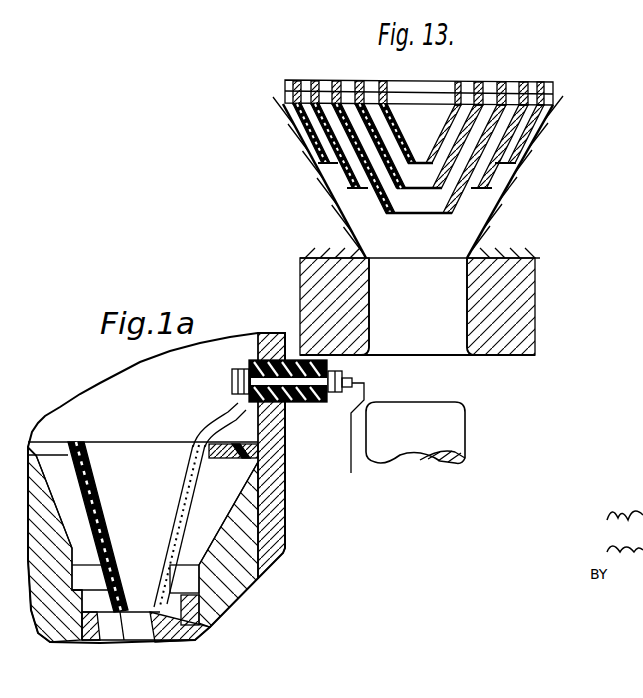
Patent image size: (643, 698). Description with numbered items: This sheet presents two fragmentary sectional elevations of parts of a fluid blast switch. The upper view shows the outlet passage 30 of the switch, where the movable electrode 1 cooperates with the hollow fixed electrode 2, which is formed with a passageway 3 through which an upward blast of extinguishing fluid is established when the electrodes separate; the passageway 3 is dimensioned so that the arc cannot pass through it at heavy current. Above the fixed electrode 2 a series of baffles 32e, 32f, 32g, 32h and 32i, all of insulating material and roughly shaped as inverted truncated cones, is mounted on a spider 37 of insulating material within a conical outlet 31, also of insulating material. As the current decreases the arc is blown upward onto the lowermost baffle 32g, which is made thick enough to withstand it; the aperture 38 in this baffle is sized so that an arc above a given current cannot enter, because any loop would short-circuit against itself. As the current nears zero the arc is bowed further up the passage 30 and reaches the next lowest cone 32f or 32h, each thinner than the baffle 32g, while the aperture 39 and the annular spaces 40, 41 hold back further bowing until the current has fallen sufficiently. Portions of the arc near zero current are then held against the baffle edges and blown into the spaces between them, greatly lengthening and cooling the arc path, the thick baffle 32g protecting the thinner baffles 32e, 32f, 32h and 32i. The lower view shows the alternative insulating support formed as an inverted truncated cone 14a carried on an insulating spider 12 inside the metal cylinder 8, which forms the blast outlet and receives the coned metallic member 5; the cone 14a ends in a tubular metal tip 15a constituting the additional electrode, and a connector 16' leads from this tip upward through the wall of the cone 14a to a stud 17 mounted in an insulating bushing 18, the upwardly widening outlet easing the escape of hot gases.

In FIG. 13, the spider 37 is at (322, 88).
In FIG. 13, the baffle 32e is at (458, 103).
In FIG. 13, the baffle 32f is at (480, 117).
In FIG. 13, the lowermost baffle 32g is at (442, 204).
In FIG. 13, the baffle 32h is at (493, 173).
In FIG. 13, the baffle 32i is at (528, 127).
In FIG. 13, the outlet passage 30 is at (388, 229).
In FIG. 13, the conical outlet 31 is at (493, 228).
In FIG. 13, the aperture 38 is at (418, 216).
In FIG. 13, the aperture 39 is at (413, 187).
In FIG. 13, the annular space 40 is at (383, 173).
In FIG. 13, the annular space 41 is at (365, 158).
In FIG. 13, the fixed electrode 2 is at (495, 309).
In FIG. 13, the passageway 3 is at (412, 344).
In FIG. 13, the movable electrode 1 is at (445, 432).
In FIG. 1A, the spider 12 is at (49, 441).
In FIG. 1A, the inverted truncated cone 14a is at (88, 455).
In FIG. 1A, the connector 16' is at (200, 502).
In FIG. 1A, the stud 17 is at (232, 382).
In FIG. 1A, the insulating bushing 18 is at (304, 403).
In FIG. 1A, the metal cylinder 8 is at (274, 473).
In FIG. 1A, the coned metallic member 5 is at (237, 528).
In FIG. 1A, the tubular metal tip 15a is at (215, 612).